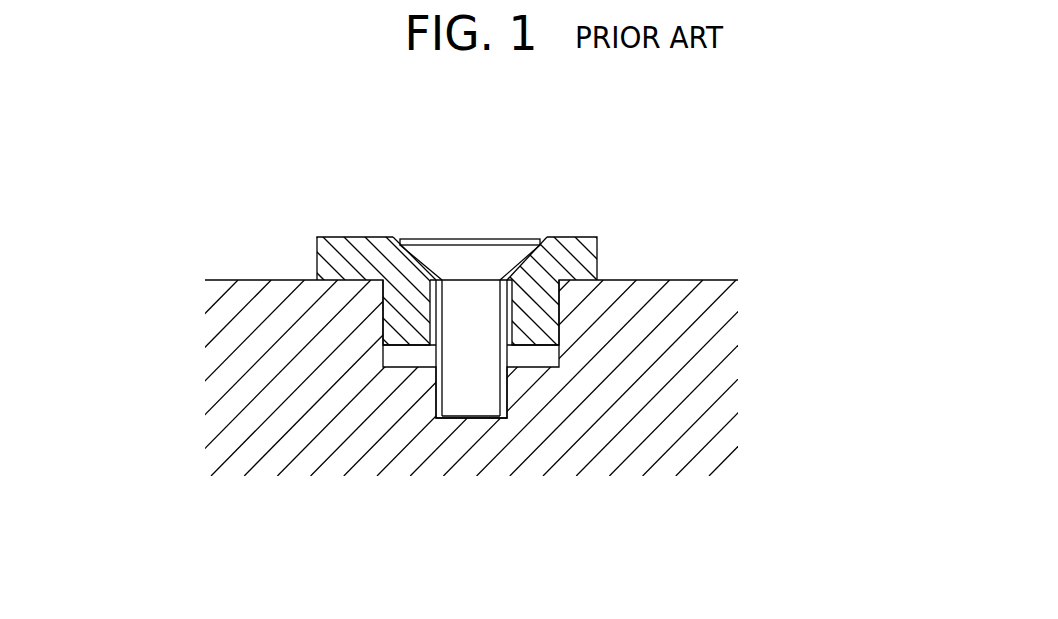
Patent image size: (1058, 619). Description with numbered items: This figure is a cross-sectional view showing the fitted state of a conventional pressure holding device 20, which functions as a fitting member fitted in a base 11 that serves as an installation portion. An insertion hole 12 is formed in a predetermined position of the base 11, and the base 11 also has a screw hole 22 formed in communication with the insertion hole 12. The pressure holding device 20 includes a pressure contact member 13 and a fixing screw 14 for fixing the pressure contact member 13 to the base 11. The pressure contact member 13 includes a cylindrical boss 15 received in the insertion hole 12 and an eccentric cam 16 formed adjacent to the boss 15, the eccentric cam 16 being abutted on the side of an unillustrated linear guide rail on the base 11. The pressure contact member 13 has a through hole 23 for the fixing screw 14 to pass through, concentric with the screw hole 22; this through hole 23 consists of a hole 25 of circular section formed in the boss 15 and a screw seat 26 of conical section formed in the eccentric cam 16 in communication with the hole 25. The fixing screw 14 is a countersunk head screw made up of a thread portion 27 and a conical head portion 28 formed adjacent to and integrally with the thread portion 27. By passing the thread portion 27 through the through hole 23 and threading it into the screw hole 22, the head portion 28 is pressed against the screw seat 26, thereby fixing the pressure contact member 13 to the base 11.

The base 11 is at (696, 274).
The insertion hole 12 is at (408, 357).
The pressure contact member 13 is at (391, 272).
The fixing screw 14 is at (450, 216).
The cylindrical boss 15 is at (410, 325).
The eccentric cam 16 is at (335, 258).
The pressure holding device 20 is at (306, 228).
The screw hole 22 is at (438, 397).
The through hole 23 is at (497, 267).
The hole 25 is at (494, 302).
The screw seat 26 is at (512, 268).
The thread portion 27 is at (410, 245).
The head portion 28 is at (463, 313).